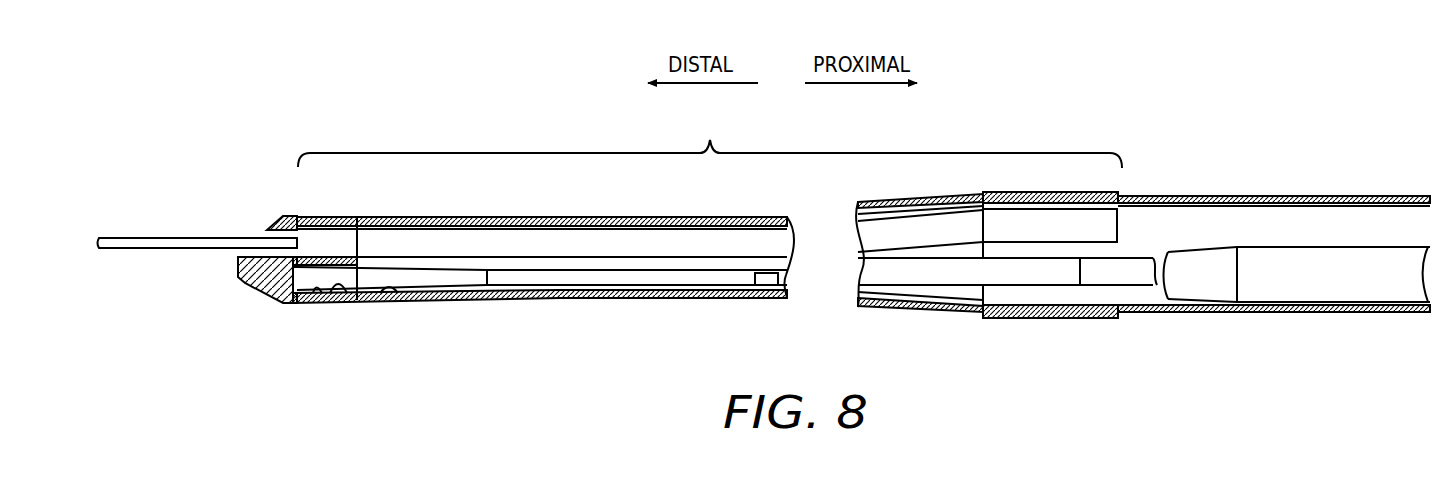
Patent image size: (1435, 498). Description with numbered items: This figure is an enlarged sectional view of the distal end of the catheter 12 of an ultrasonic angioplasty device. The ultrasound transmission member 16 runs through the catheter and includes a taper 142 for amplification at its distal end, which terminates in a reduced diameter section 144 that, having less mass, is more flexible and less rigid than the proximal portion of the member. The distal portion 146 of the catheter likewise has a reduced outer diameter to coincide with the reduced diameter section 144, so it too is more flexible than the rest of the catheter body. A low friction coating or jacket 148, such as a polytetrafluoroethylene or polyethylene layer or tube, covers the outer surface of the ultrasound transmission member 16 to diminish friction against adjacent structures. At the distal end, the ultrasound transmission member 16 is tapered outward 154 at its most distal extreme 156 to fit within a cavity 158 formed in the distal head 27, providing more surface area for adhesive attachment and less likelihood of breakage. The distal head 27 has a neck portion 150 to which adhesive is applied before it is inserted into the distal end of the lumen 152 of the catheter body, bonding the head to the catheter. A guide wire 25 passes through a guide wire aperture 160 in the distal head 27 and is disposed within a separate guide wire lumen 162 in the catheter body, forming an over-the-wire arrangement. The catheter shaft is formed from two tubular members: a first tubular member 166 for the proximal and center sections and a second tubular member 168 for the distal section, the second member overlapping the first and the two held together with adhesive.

The catheter 12 is at (603, 301).
The ultrasound transmission member 16 is at (1328, 313).
The guide wire 25 is at (113, 237).
The distal head 27 is at (245, 286).
The taper 142 is at (1210, 291).
The reduced diameter section 144 is at (971, 289).
The distal portion 146 is at (710, 142).
The low friction coating or jacket 148 is at (1343, 272).
The neck portion 150 is at (342, 217).
The lumen 152 is at (405, 300).
The outward taper 154 is at (458, 278).
The most distal extreme 156 is at (315, 284).
The cavity 158 is at (353, 307).
The guide wire aperture 160 is at (260, 228).
The guide wire lumen 162 is at (1122, 223).
The first tubular member 166 is at (1274, 194).
The second tubular member 168 is at (728, 206).